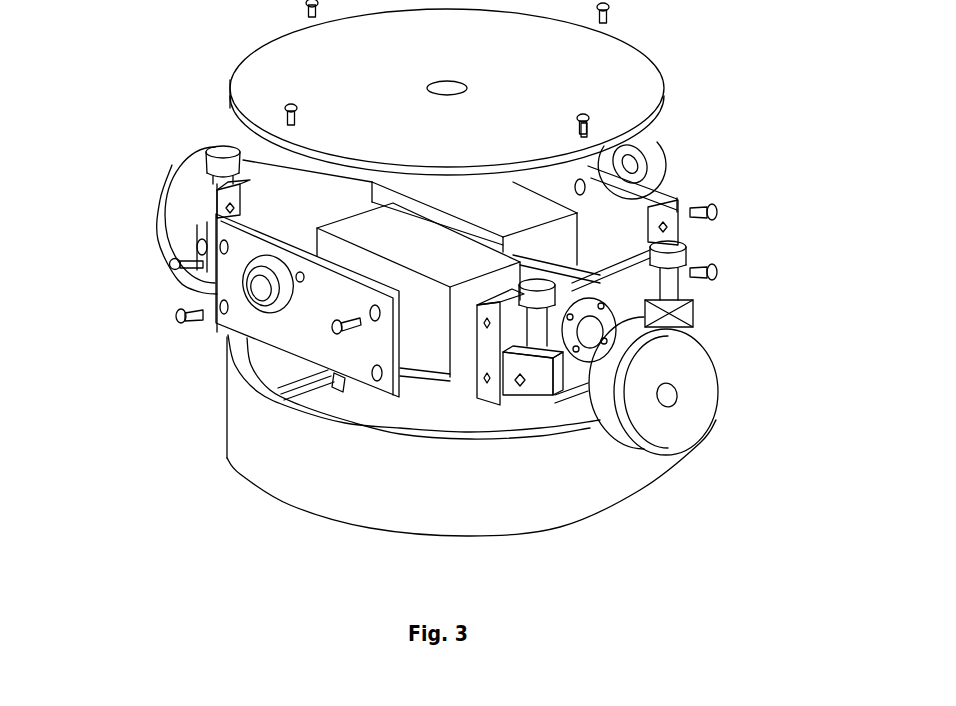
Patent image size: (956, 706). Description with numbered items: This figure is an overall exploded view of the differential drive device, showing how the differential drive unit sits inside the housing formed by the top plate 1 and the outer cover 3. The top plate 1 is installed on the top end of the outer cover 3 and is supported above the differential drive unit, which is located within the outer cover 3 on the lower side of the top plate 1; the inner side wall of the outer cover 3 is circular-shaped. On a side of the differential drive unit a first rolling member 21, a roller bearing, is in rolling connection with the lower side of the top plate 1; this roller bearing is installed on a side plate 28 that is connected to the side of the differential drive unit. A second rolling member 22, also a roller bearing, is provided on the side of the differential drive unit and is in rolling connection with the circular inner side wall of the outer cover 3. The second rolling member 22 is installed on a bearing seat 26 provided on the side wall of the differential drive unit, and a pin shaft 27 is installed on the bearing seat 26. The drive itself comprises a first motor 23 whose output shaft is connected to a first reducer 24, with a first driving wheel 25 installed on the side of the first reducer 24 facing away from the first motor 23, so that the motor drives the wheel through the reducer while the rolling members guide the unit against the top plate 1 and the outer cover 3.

The top plate 1 is at (283, 80).
The outer cover 3 is at (255, 425).
The first rolling member 21 is at (240, 290).
The second rolling member 22 is at (690, 247).
The first motor 23 is at (428, 340).
The first reducer 24 is at (510, 398).
The first driving wheel 25 is at (663, 420).
The bearing seat 26 is at (560, 368).
The pin shaft 27 is at (518, 383).
The side plate 28 is at (203, 215).